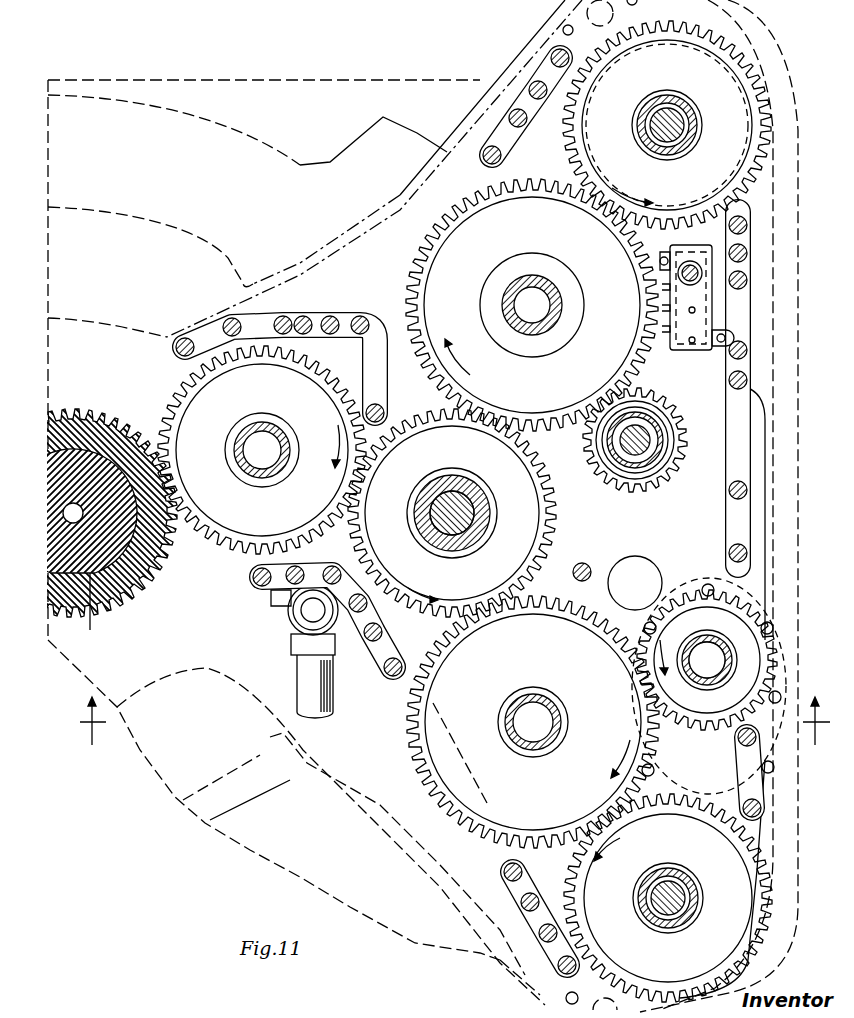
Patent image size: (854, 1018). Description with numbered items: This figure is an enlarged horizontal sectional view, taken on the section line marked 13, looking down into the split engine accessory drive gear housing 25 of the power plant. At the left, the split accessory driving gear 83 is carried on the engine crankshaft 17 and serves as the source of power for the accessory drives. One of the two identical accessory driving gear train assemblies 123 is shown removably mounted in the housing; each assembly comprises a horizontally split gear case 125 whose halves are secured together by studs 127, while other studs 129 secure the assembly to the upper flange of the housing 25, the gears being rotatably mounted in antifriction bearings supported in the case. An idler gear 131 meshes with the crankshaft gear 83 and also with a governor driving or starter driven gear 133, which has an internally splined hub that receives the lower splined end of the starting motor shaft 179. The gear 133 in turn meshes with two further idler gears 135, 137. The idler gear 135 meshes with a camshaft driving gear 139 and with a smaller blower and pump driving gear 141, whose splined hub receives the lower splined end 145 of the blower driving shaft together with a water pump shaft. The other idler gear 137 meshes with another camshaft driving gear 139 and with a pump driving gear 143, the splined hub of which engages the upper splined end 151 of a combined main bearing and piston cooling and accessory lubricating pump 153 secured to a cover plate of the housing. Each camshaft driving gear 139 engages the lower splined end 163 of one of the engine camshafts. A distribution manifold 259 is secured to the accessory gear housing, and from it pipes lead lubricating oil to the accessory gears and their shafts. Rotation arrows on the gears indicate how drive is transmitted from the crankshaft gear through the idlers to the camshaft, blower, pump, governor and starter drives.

The self-aligning antifriction thrust bearing 13 is at (444, 719).
The engine crankshaft 17 is at (88, 600).
The split engine accessory drive gear housing 25 is at (495, 985).
The split accessory driving gear 83 is at (191, 507).
The accessory driving gear train assembly 123 is at (491, 133).
The horizontally split gear case 125 is at (348, 318).
The studs 127 is at (552, 56).
The studs 129 is at (486, 163).
The idler gear 131 is at (232, 525).
The governor driving or starter driven gear 133 is at (412, 425).
The idler gear 135 is at (432, 268).
The idler gear 137 is at (492, 800).
The camshaft driving gear 139 is at (572, 155).
The blower and pump driving gear 141 is at (668, 434).
The pump driving gear 143 is at (690, 605).
The lower splined end of the blower driving shaft 145 is at (650, 445).
The upper splined end of the pump 151 is at (707, 668).
The combined main bearing and piston cooling and accessory lubricating pump 153 is at (762, 809).
The lower splined end of the camshaft 163 is at (652, 112).
The lower splined end of the starting motor shaft 179 is at (440, 512).
The distribution manifold 259 is at (700, 295).